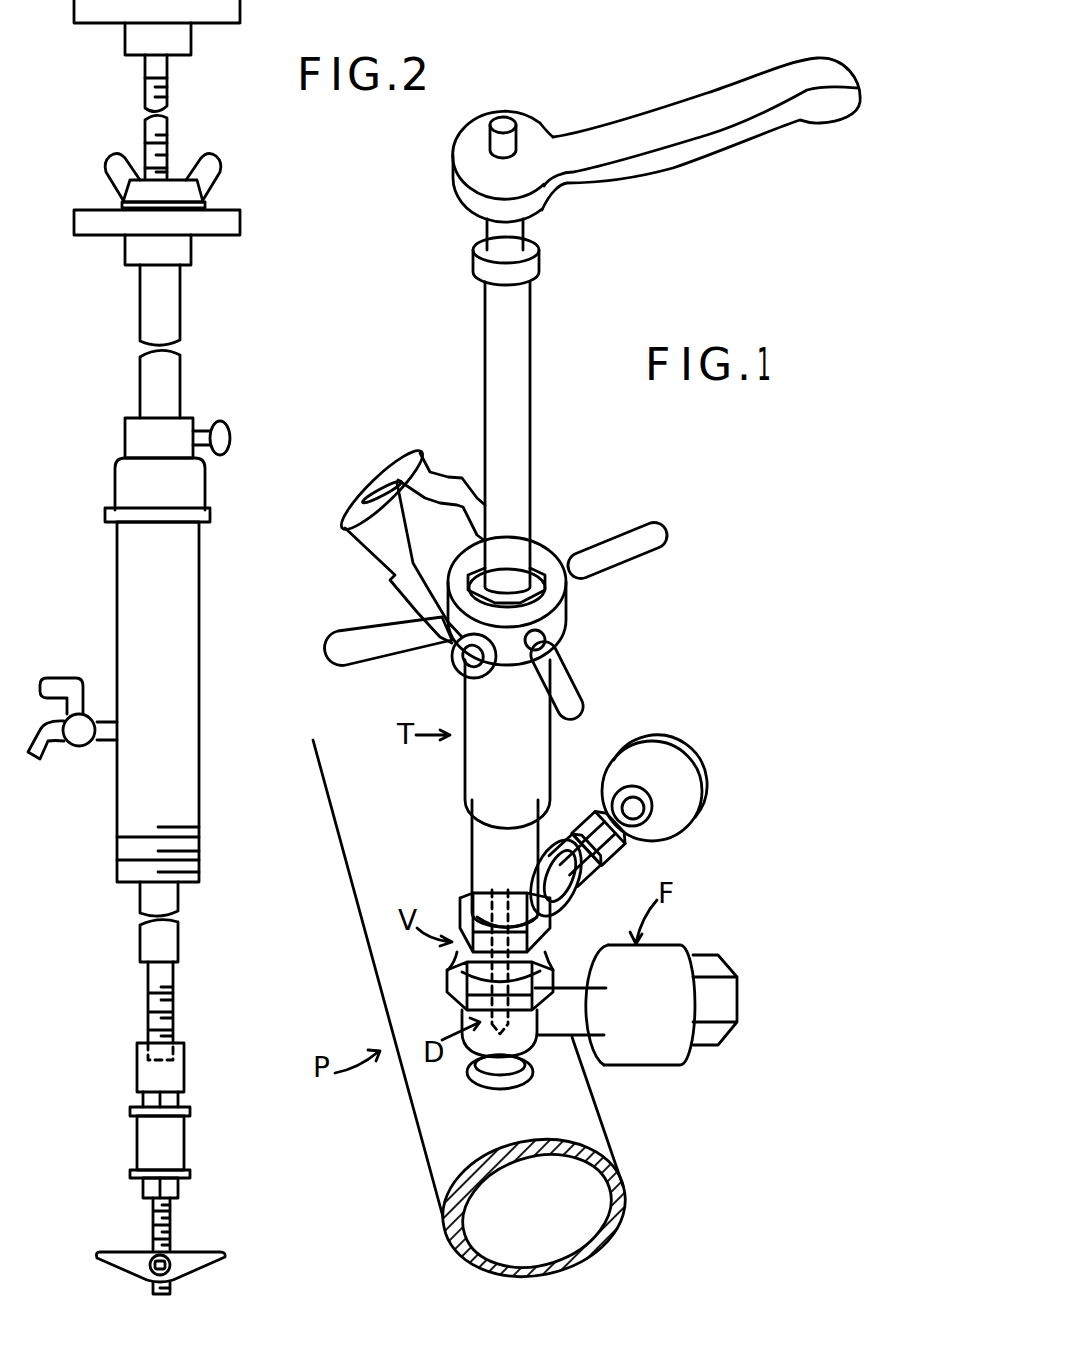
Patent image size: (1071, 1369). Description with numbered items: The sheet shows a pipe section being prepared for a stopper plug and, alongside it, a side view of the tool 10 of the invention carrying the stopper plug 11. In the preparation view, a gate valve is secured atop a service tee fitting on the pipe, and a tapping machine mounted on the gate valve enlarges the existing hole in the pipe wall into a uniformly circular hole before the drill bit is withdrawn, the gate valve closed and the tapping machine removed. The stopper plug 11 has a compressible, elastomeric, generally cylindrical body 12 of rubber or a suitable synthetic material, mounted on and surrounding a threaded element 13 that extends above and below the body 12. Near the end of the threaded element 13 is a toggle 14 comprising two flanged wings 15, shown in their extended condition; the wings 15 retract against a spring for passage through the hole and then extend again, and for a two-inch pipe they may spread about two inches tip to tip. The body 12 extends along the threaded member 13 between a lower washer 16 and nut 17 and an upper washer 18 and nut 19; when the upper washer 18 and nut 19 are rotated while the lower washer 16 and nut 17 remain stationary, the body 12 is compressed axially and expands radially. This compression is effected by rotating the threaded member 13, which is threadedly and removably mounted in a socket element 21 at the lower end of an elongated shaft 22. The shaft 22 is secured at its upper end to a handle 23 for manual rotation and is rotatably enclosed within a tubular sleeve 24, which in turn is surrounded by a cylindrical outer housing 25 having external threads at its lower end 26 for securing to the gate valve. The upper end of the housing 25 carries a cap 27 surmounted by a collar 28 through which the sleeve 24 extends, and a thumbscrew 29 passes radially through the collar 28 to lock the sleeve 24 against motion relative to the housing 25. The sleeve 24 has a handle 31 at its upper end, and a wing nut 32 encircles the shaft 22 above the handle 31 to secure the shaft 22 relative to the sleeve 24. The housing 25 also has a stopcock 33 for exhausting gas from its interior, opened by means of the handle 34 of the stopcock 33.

The tool 10 is at (220, 596).
The stopper plug 11 is at (113, 1137).
The body 12 is at (179, 1148).
The threaded element 13 is at (152, 1220).
The toggle 14 is at (207, 1278).
The flanged wings 15 is at (103, 1252).
The lower washer 16 is at (132, 1172).
The nut 17 is at (180, 1188).
The upper washer 18 is at (128, 1112).
The nut 19 is at (182, 1098).
The socket element 21 is at (185, 1070).
The shaft 22 is at (168, 133).
The handle 23 is at (240, 13).
The tubular sleeve 24 is at (179, 372).
The outer housing 25 is at (189, 727).
The lower end 26 is at (200, 856).
The cap 27 is at (195, 493).
The collar 28 is at (130, 434).
The thumbscrew 29 is at (228, 433).
The handle 31 is at (240, 222).
The wing nut 32 is at (212, 183).
The stopcock 33 is at (80, 760).
The handle 34 is at (64, 679).